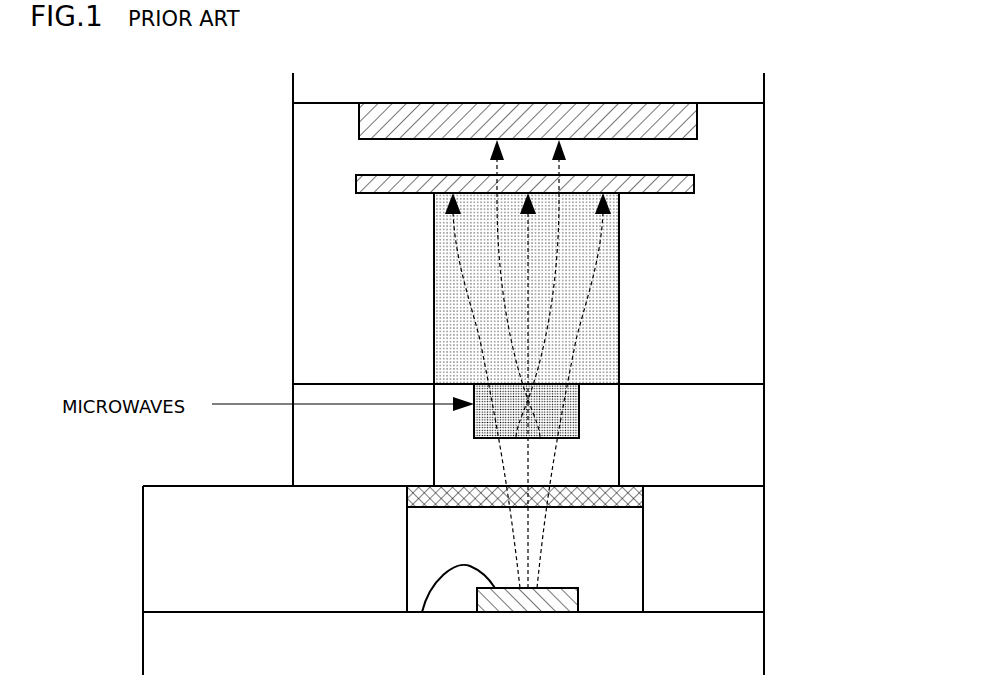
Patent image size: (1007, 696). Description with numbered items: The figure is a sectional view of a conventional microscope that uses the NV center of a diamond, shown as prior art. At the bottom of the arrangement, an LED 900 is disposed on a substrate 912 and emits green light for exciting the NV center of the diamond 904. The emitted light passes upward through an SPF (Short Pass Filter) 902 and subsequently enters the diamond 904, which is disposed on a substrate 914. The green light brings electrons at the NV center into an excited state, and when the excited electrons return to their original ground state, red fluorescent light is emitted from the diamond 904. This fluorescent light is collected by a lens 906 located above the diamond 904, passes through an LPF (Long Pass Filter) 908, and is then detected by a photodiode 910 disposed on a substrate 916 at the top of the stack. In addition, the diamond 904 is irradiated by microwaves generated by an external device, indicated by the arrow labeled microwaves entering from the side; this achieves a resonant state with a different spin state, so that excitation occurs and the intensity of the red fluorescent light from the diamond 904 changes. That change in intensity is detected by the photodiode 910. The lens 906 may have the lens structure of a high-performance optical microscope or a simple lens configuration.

The LED 900 is at (578, 598).
The SPF (Short Pass Filter) 902 is at (407, 490).
The diamond 904 is at (474, 420).
The lens 906 is at (433, 326).
The LPF (Long Pass Filter) 908 is at (356, 184).
The photodiode 910 is at (697, 121).
The substrate 912 is at (765, 636).
The substrate 914 is at (765, 445).
The substrate 916 is at (764, 82).